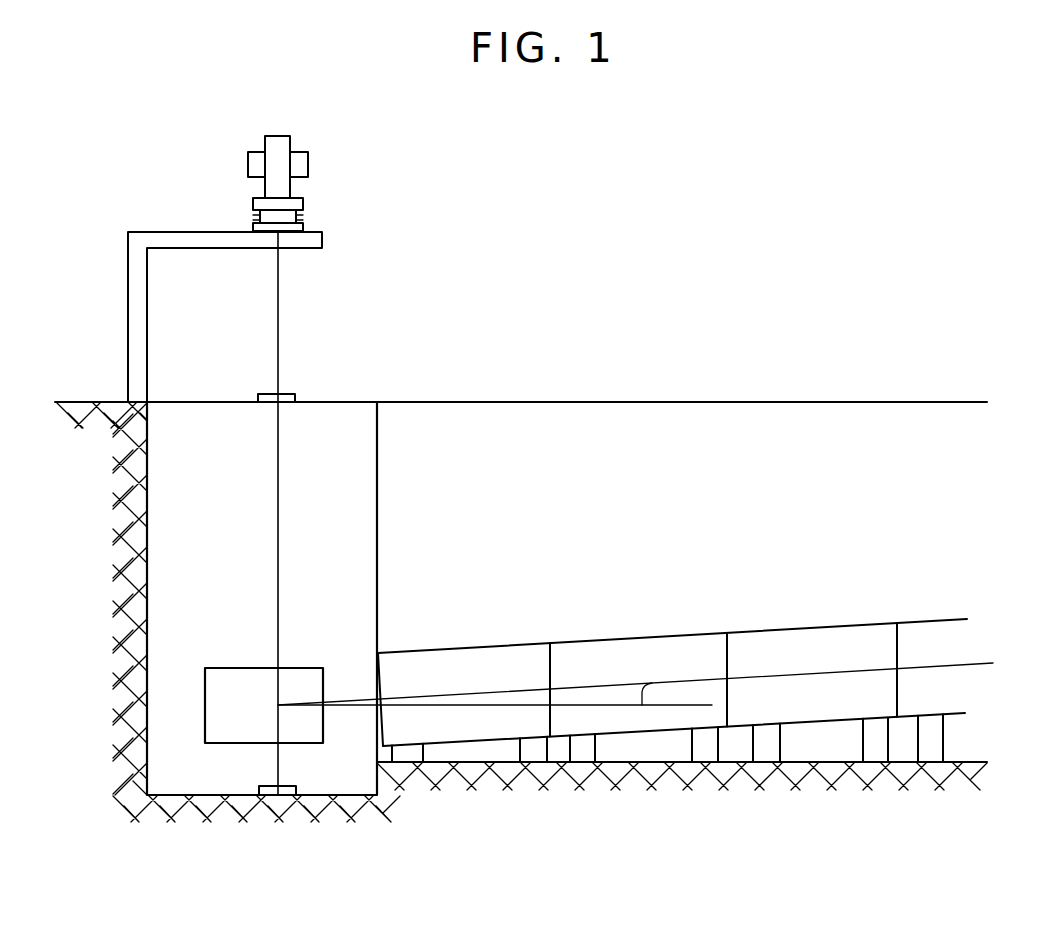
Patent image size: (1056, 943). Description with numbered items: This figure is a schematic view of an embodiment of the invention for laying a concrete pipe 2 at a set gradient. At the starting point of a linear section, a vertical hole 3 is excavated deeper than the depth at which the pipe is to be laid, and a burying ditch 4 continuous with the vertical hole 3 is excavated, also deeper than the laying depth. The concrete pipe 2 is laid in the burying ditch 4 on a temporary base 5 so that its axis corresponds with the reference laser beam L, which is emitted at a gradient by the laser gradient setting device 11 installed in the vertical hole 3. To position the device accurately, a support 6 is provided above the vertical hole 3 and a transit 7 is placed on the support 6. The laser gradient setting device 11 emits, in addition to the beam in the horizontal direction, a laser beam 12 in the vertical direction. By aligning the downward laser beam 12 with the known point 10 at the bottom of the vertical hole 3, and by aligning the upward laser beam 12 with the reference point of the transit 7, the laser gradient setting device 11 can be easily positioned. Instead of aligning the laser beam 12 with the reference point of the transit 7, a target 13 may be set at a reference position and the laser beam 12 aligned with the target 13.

The concrete pipe 2 is at (488, 660).
The vertical hole 3 is at (345, 420).
The burying ditch 4 is at (793, 432).
The temporary base 5 is at (770, 740).
The support 6 is at (128, 333).
The transit 7 is at (292, 143).
The known point 10 is at (278, 785).
The laser gradient setting device 11 is at (232, 690).
The laser beam 12 is at (281, 515).
The target 13 is at (292, 394).
The reference laser beam L is at (827, 670).